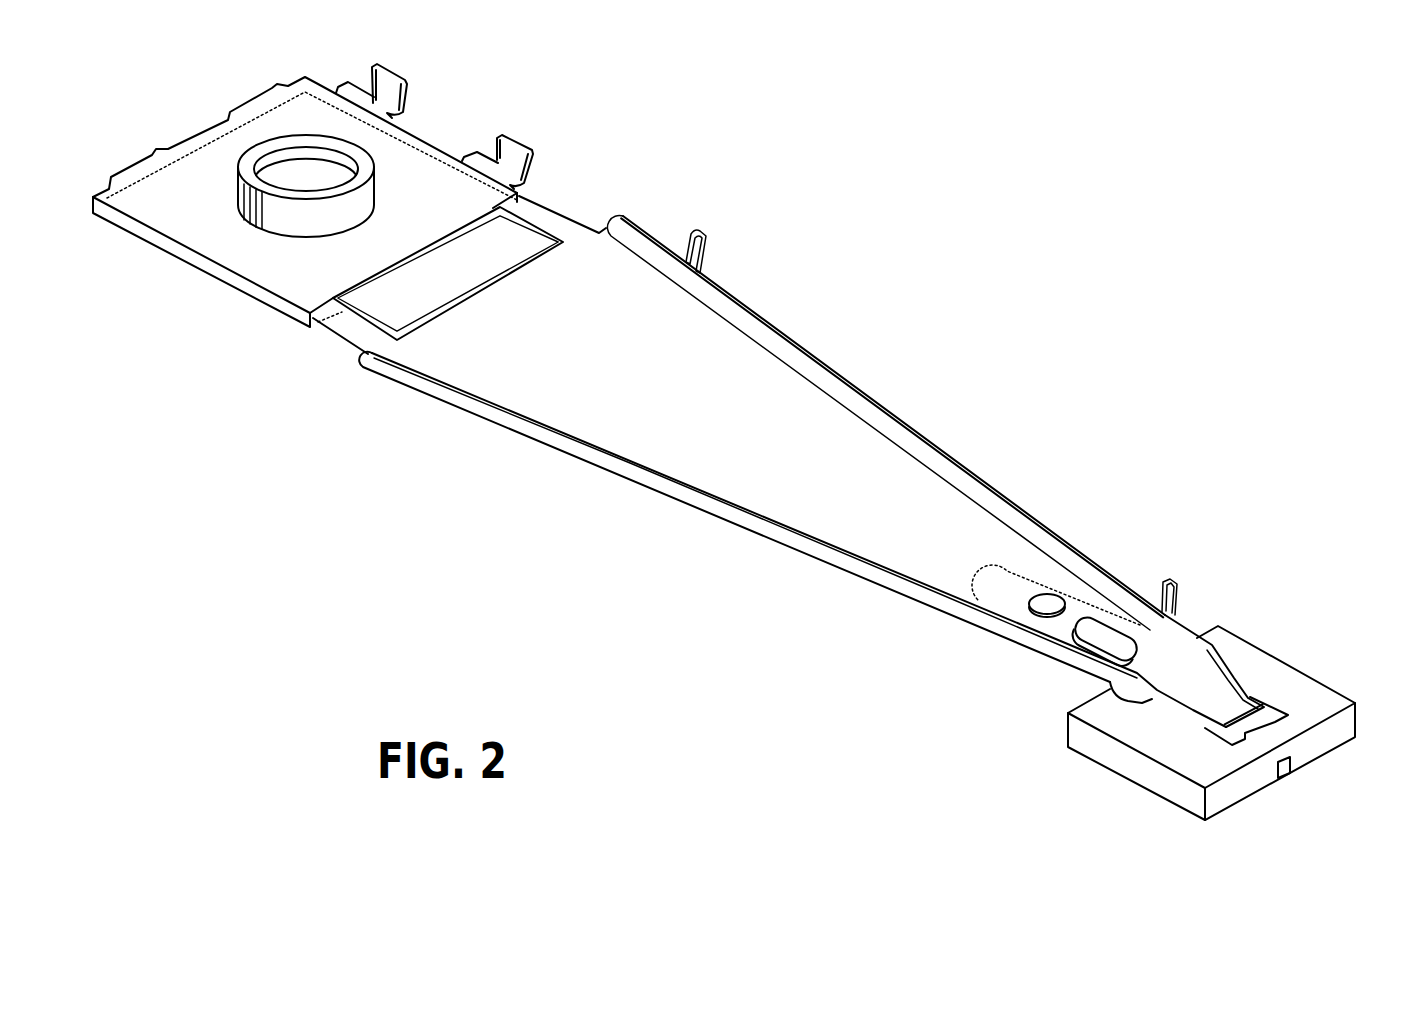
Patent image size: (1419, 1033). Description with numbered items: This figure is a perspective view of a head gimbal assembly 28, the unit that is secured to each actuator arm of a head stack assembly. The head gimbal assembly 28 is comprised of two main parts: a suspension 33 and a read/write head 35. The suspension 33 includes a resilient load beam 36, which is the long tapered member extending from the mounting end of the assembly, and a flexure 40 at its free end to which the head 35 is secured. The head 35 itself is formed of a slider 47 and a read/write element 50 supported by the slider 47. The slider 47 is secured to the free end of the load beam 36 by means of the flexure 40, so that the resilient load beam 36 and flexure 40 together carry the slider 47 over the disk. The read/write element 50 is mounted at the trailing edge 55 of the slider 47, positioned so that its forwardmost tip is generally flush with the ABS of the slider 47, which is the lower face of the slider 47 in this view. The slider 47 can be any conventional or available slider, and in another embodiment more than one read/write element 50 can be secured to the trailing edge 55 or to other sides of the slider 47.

The head gimbal assembly 28 is at (856, 204).
The load beam 36 is at (833, 440).
The suspension 33 is at (1049, 495).
The read/write head 35 is at (1243, 707).
The slider 47 is at (1278, 658).
The flexure 40 is at (1097, 690).
The read/write element 50 is at (1284, 775).
The trailing edge 55 is at (1357, 736).
The air bearing surface ABS is at (1235, 805).